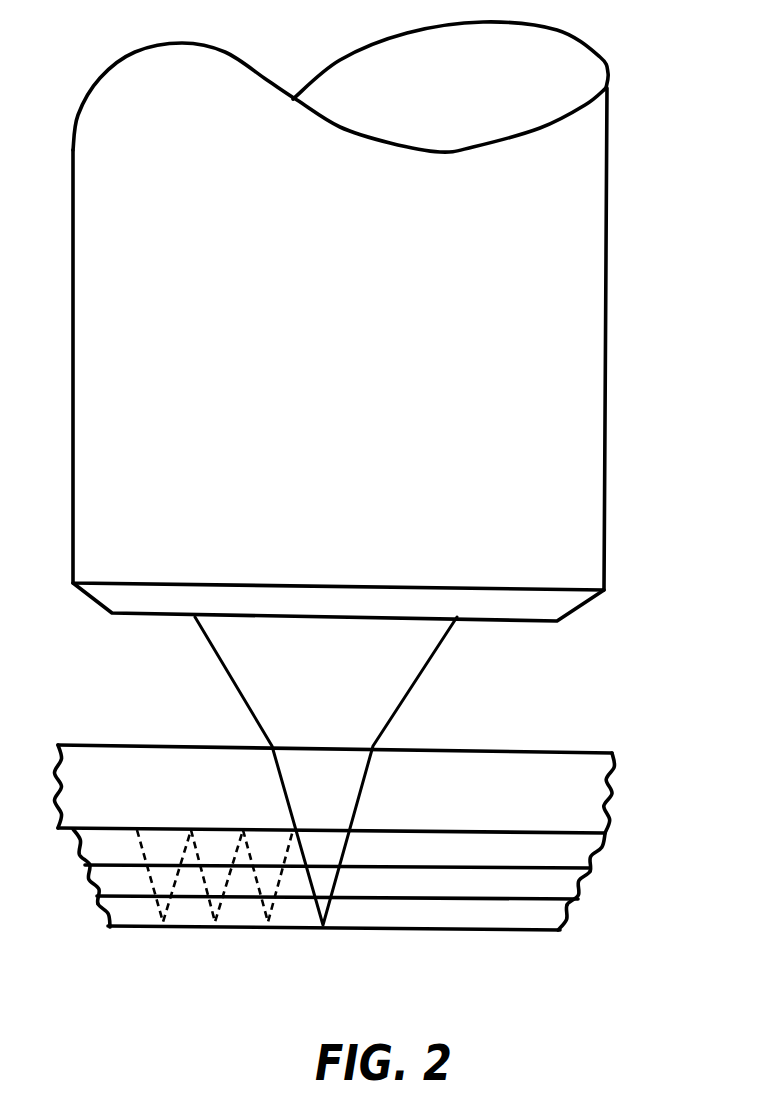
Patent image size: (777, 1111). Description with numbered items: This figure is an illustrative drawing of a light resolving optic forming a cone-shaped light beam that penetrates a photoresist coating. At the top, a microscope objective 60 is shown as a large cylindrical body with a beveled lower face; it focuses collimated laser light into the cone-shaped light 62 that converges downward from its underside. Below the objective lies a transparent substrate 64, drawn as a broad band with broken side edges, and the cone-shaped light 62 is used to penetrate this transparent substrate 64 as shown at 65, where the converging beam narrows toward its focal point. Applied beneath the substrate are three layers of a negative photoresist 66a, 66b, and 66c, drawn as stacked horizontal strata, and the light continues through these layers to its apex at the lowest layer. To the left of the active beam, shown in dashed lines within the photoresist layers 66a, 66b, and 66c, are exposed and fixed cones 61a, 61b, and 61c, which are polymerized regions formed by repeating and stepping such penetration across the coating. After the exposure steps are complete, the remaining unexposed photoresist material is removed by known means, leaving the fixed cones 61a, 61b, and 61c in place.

The microscope objective 60 is at (577, 382).
The cone-shaped light 62 is at (390, 675).
The transparent substrate 64 is at (542, 768).
The light penetration through substrate 65 is at (342, 790).
The exposed and fixed cone 61a is at (168, 845).
The exposed and fixed cone 61b is at (220, 847).
The exposed and fixed cone 61c is at (278, 848).
The negative photoresist layer 66a is at (573, 850).
The negative photoresist layer 66b is at (560, 882).
The negative photoresist layer 66c is at (542, 912).